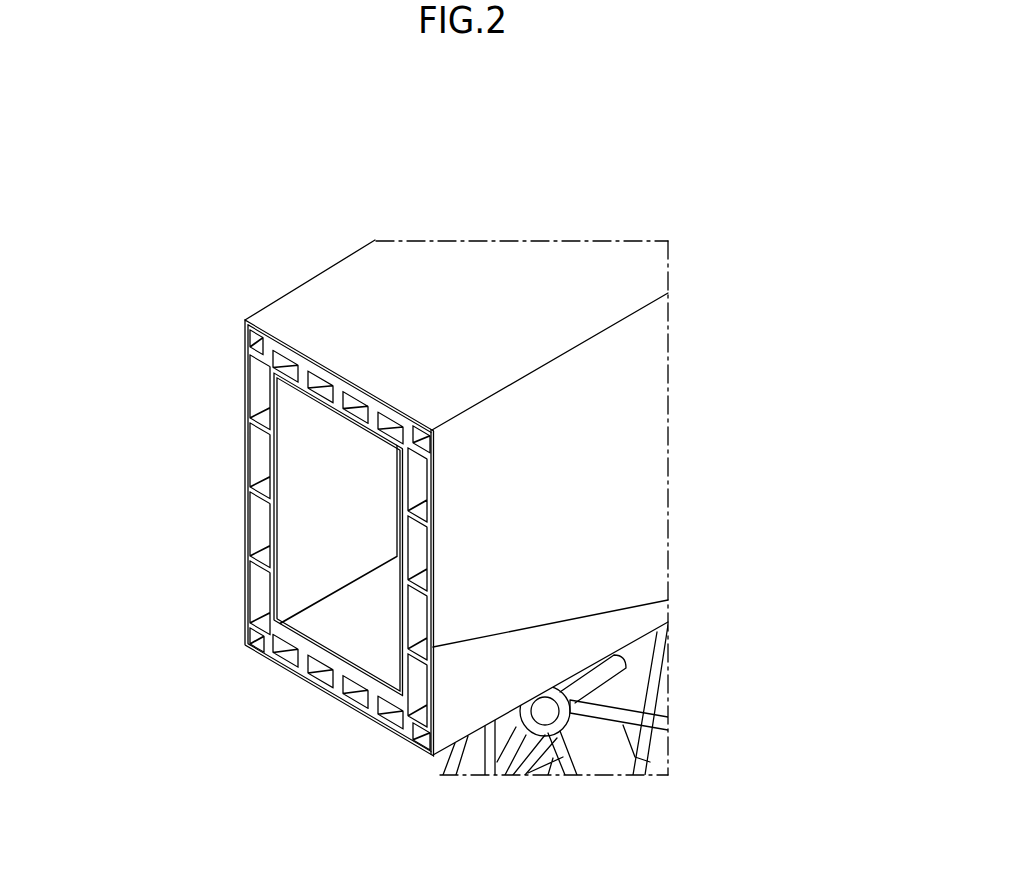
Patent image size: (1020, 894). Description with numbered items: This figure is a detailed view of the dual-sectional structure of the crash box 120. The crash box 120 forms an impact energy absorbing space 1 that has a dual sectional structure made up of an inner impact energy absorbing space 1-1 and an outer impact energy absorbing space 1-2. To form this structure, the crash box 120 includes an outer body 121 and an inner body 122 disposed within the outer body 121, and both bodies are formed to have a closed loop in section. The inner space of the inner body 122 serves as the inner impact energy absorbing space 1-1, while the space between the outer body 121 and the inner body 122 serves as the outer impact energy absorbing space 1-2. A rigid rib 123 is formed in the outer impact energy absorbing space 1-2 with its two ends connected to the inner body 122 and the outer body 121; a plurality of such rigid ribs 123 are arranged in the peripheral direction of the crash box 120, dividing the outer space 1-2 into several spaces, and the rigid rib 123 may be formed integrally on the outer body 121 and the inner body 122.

The impact energy absorbing space 1 is at (77, 575).
The inner impact energy absorbing space 1-1 is at (355, 628).
The outer impact energy absorbing space 1-2 is at (258, 533).
The crash box 120 is at (812, 407).
The outer body 121 is at (620, 438).
The inner body 122 is at (405, 607).
The rigid rib 123 is at (417, 652).